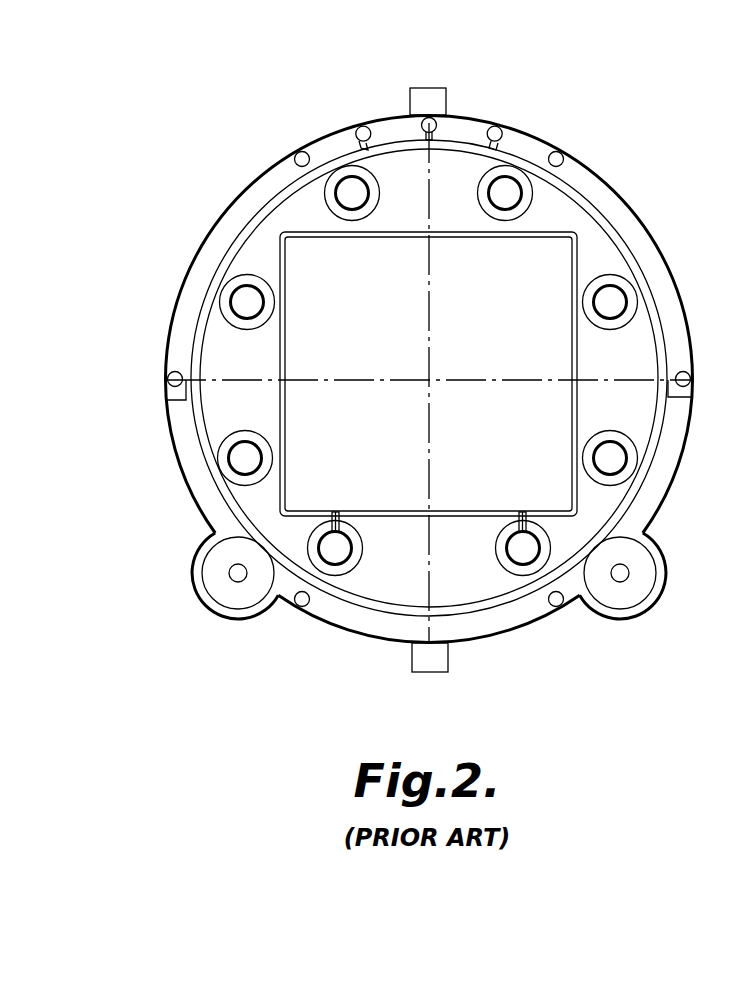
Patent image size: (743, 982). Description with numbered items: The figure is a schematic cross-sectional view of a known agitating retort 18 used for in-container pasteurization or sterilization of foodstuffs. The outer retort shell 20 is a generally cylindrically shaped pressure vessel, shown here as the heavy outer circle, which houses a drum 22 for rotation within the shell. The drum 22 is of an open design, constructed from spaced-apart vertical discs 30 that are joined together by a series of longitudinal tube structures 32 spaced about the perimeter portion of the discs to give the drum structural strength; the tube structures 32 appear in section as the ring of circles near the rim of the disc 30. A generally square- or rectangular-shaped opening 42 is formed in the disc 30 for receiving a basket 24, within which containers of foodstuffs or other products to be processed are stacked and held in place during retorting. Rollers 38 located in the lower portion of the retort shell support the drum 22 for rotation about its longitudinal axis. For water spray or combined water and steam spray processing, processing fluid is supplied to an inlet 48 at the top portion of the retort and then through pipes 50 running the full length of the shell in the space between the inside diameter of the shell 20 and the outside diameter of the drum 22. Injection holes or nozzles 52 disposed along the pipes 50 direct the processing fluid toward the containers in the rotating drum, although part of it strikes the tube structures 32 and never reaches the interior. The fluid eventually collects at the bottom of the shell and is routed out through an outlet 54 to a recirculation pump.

The agitating retort 18 is at (316, 85).
The outer retort shell 20 is at (188, 262).
The drum 22 is at (292, 204).
The basket 24 is at (280, 500).
The vertical disc 30 is at (558, 218).
The longitudinal tube structure 32 is at (620, 278).
The roller 38 is at (216, 592).
The opening 42 is at (283, 372).
The inlet 48 is at (447, 97).
The pipe 50 is at (501, 125).
The nozzle 52 is at (507, 150).
The outlet 54 is at (449, 666).